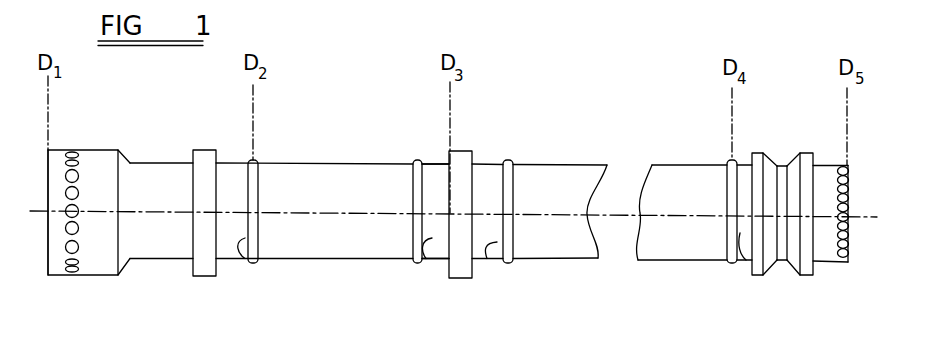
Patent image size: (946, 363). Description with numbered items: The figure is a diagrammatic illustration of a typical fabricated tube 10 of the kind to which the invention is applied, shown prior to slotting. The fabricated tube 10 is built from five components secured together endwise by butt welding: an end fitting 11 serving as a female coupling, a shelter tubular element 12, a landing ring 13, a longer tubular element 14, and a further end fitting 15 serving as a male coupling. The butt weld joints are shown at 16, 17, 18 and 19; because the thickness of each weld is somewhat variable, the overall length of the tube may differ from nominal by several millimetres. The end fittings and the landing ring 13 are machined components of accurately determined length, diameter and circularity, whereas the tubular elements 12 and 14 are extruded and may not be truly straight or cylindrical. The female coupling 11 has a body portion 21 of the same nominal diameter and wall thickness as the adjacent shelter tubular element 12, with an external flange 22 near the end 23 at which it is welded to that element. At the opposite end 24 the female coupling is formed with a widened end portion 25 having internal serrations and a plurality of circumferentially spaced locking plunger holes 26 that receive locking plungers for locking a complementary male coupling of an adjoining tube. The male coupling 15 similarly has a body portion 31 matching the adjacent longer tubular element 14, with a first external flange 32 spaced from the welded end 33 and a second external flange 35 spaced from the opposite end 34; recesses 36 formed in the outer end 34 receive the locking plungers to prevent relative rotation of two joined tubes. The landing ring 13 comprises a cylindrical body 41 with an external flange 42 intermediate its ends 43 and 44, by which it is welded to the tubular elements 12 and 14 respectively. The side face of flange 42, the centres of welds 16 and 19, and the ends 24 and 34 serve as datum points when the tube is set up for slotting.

The fabricated tube 10 is at (367, 149).
The end fitting 11 is at (110, 147).
The shelter tubular element 12 is at (308, 162).
The landing ring 13 is at (436, 161).
The longer tubular element 14 is at (558, 162).
The end fitting 15 is at (748, 158).
The butt weld joint 16 is at (252, 263).
The butt weld joint 17 is at (417, 263).
The butt weld joint 18 is at (506, 263).
The butt weld joint 19 is at (727, 265).
The body portion 21 is at (160, 259).
The external flange 22 is at (203, 277).
The end 23 is at (240, 262).
The end 24 is at (48, 250).
The widened end portion 25 is at (102, 277).
The locking plunger holes 26 is at (66, 193).
The body portion 31 is at (780, 265).
The first external flange 32 is at (765, 152).
The end 33 is at (740, 263).
The end 34 is at (850, 228).
The second external flange 35 is at (805, 151).
The recesses 36 is at (847, 192).
The cylindrical body 41 is at (437, 260).
The external flange 42 is at (463, 278).
The end 43 is at (421, 263).
The end 44 is at (487, 260).